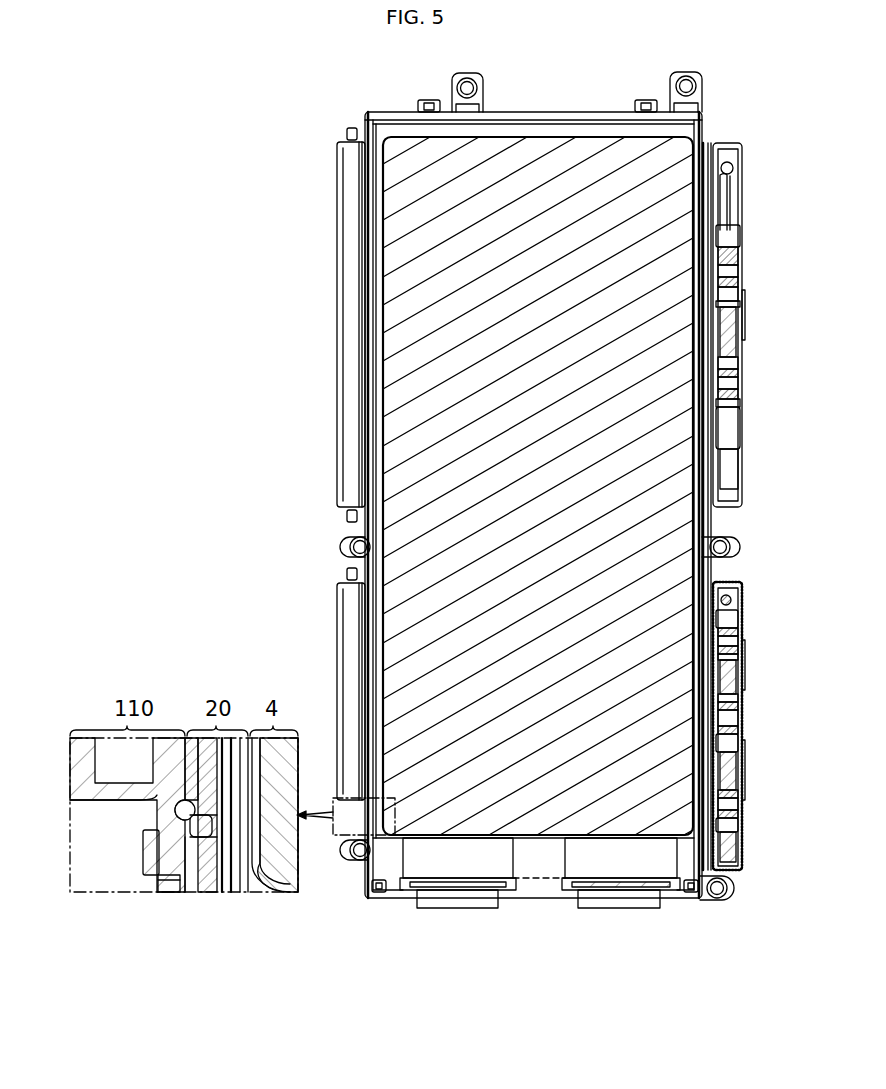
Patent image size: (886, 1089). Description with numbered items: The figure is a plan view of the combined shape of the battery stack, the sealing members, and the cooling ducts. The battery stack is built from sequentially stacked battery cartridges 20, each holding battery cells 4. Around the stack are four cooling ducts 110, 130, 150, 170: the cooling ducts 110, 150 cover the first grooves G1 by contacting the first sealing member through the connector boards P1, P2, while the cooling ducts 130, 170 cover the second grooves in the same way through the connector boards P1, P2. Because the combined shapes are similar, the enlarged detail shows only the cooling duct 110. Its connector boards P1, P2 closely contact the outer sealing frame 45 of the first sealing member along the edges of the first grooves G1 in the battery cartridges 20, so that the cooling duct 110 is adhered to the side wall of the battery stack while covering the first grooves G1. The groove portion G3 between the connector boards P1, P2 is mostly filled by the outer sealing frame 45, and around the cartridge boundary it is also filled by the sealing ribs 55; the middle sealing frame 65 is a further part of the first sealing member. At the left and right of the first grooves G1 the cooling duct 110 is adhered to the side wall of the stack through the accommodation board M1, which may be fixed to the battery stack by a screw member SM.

The battery cell 4 is at (527, 126).
The battery cartridge 20 is at (583, 112).
The cooling duct 110 is at (337, 632).
The cooling duct 130 is at (337, 358).
The cooling duct 150 is at (742, 702).
The cooling duct 170 is at (742, 321).
The middle sealing frame 65 is at (202, 758).
The connector board P2 is at (180, 792).
The groove portion G3 is at (175, 808).
The connector board P1 is at (188, 825).
The screw member SM is at (144, 864).
The accommodation board M1 is at (167, 885).
The first groove G1 is at (198, 832).
The outer sealing frame 45 is at (223, 837).
The sealing rib 55 is at (223, 837).